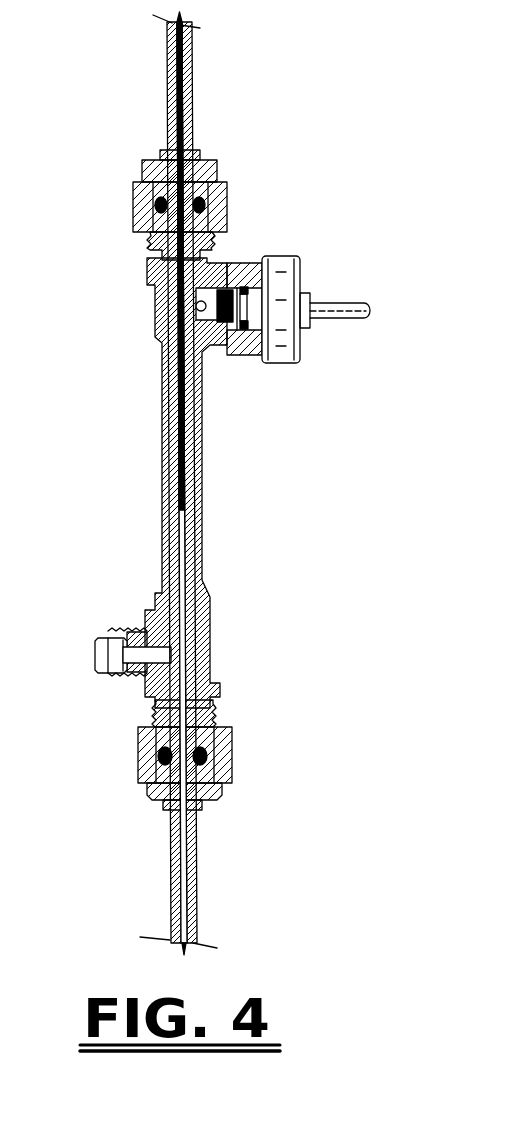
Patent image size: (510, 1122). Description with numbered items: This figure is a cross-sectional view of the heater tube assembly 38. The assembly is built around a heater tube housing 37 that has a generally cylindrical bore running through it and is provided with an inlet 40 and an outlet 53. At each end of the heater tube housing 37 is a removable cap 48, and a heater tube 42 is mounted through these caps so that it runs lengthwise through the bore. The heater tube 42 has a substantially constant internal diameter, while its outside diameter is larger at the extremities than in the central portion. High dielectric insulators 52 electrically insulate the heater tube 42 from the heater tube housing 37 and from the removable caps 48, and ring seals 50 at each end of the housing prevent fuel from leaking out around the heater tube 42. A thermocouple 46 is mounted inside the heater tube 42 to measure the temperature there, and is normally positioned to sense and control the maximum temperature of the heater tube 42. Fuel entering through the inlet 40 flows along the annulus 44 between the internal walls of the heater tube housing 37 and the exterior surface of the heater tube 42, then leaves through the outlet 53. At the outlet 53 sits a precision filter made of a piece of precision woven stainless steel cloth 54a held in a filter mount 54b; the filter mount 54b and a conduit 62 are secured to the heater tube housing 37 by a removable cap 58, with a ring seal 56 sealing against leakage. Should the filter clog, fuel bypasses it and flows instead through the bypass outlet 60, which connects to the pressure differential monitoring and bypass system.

The heater tube housing 37 is at (201, 462).
The heater tube assembly 38 is at (153, 483).
The inlet 40 is at (88, 652).
The heater tube 42 is at (193, 72).
The annulus 44 is at (186, 503).
The thermocouple 46 is at (172, 96).
The removable cap 48 is at (227, 191).
The ring seal 50 is at (156, 197).
The high dielectric insulator 52 is at (198, 154).
The outlet 53 is at (221, 288).
The precision woven stainless steel cloth 54a is at (160, 272).
The filter mount 54b is at (224, 342).
The ring seal 56 is at (243, 357).
The removable cap 58 is at (302, 342).
The bypass outlet 60 is at (196, 306).
The conduit 62 is at (337, 302).